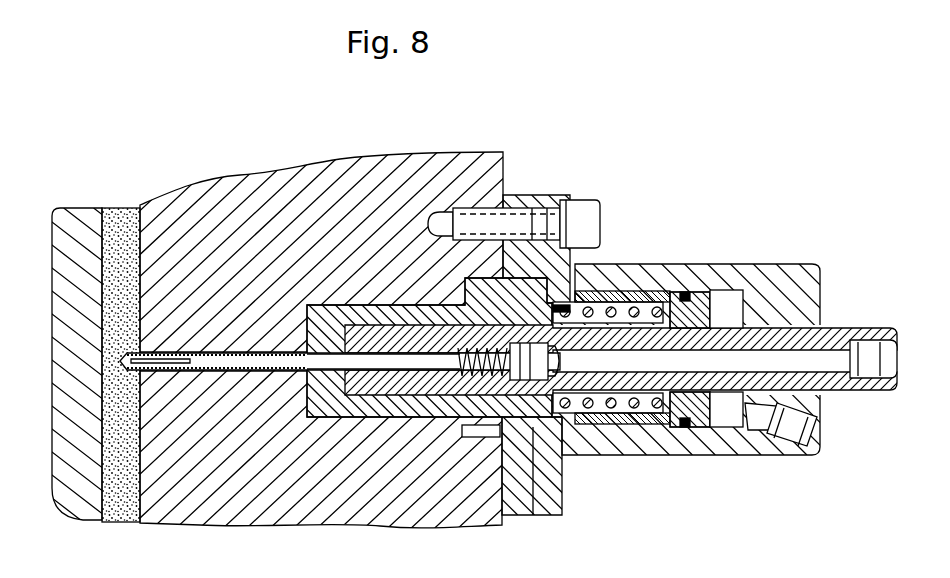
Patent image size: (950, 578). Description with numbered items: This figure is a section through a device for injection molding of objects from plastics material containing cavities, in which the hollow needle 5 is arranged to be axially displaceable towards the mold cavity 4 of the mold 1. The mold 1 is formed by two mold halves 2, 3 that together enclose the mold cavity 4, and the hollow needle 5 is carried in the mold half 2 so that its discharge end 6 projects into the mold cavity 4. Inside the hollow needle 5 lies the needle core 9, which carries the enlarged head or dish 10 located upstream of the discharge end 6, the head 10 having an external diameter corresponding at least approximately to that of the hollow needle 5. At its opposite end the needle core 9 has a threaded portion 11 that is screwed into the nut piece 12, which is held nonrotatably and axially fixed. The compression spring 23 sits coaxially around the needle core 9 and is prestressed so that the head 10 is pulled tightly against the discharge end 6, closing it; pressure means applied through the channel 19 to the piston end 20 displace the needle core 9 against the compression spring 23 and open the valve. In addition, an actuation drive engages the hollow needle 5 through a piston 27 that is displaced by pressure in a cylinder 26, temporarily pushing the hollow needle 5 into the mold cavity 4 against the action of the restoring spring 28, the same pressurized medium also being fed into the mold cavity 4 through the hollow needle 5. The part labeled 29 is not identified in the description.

The mold 1 is at (157, 218).
The mold half 2 is at (247, 212).
The mold half 3 is at (72, 450).
The mold cavity 4 is at (118, 257).
The hollow needle 5 is at (210, 373).
The discharge end 6 is at (120, 377).
The needle core 9 is at (257, 373).
The head 10 is at (113, 363).
The threaded portion 11 is at (547, 227).
The nut piece 12 is at (538, 517).
The channel 19 is at (832, 360).
The end of the piston 20 is at (730, 413).
The compression spring 23 is at (482, 400).
The cylinder 26 is at (777, 293).
The piston 27 is at (702, 312).
The restoring spring 28 is at (605, 430).
The housing end 29 is at (755, 467).